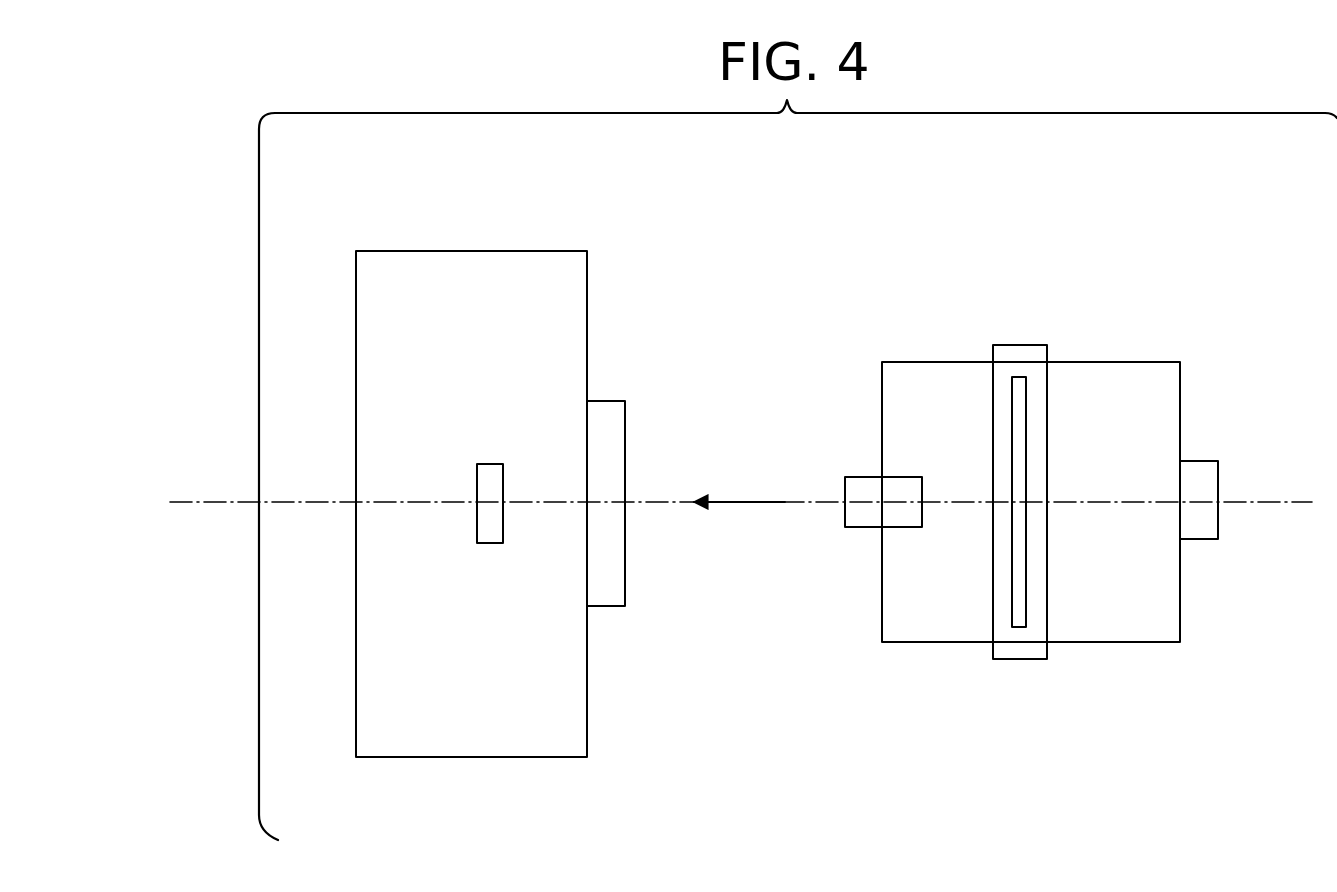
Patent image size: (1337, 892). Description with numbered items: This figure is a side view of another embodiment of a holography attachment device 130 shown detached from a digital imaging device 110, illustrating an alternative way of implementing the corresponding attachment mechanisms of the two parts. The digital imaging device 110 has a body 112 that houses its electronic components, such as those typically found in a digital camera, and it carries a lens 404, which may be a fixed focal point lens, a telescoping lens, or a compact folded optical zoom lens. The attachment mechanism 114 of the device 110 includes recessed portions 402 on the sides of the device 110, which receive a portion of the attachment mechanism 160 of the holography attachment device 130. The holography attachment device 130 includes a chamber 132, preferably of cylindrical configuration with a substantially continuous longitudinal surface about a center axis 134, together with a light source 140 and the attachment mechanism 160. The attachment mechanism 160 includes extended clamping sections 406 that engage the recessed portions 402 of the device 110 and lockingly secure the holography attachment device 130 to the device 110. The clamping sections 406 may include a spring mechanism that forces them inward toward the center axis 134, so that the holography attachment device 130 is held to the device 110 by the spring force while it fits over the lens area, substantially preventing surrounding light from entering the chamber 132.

The digital imaging device 110 is at (479, 470).
The body 112 is at (456, 250).
The attachment mechanism 114 is at (484, 455).
The holography attachment device 130 is at (1023, 439).
The chamber 132 is at (1126, 372).
The center axis 134 is at (305, 509).
The light source 140 is at (1198, 535).
The attachment mechanism 160 is at (836, 540).
The recessed portions 402 is at (492, 530).
The lens 404 is at (628, 395).
The clamping sections 406 is at (860, 485).